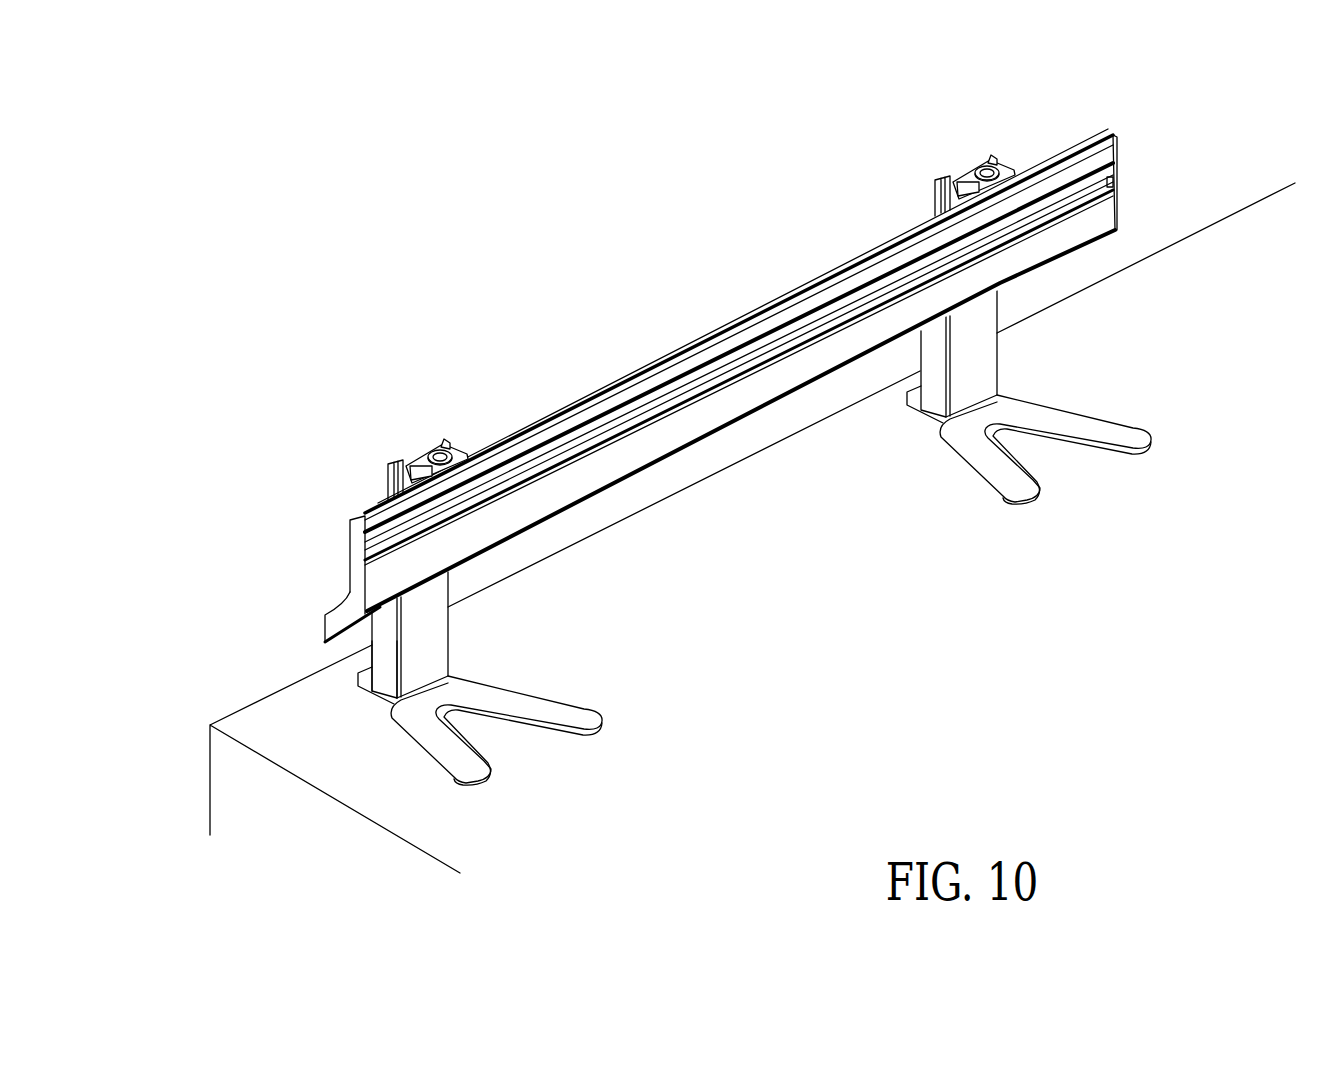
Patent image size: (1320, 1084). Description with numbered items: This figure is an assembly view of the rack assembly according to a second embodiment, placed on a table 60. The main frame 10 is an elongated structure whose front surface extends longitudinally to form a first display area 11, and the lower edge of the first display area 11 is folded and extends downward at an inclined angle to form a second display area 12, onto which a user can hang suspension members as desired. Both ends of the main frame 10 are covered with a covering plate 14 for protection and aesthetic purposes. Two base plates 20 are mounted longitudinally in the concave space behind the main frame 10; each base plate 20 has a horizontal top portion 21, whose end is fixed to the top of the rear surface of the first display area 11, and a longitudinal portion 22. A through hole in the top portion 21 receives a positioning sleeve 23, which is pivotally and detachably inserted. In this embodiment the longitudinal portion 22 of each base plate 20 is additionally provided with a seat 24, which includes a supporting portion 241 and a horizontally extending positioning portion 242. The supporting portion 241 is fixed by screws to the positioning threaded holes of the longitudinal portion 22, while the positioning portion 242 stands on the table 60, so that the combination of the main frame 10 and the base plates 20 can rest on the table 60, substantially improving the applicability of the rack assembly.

The main frame 10 is at (695, 369).
The first display area 11 is at (1122, 160).
The second display area 12 is at (357, 632).
The covering plate 14 is at (349, 594).
The base plate 20 is at (693, 285).
The top portion 21 is at (410, 465).
The longitudinal portion 22 is at (392, 463).
The positioning sleeve 23 is at (436, 447).
The seat 24 is at (773, 573).
The supporting portion 241 is at (347, 704).
The positioning portion 242 is at (453, 765).
The table 60 is at (247, 713).